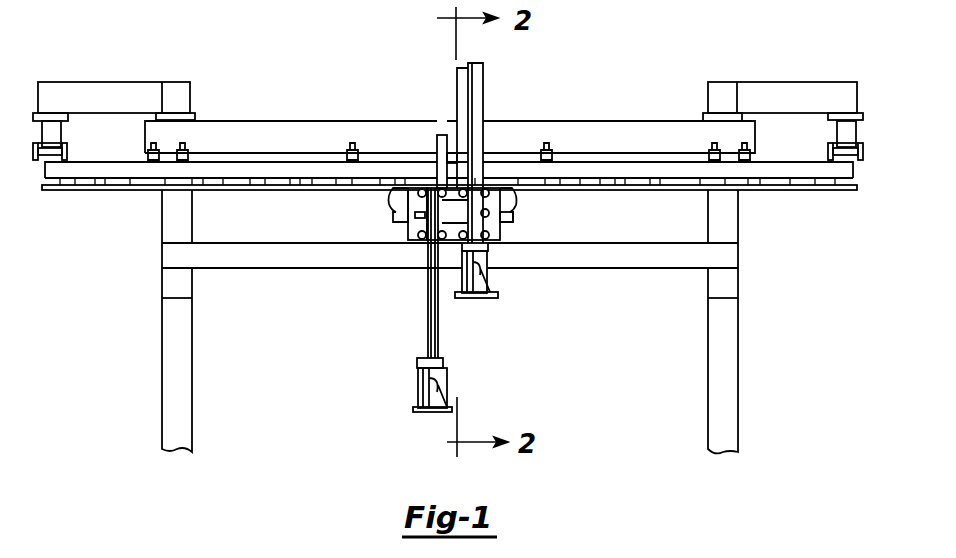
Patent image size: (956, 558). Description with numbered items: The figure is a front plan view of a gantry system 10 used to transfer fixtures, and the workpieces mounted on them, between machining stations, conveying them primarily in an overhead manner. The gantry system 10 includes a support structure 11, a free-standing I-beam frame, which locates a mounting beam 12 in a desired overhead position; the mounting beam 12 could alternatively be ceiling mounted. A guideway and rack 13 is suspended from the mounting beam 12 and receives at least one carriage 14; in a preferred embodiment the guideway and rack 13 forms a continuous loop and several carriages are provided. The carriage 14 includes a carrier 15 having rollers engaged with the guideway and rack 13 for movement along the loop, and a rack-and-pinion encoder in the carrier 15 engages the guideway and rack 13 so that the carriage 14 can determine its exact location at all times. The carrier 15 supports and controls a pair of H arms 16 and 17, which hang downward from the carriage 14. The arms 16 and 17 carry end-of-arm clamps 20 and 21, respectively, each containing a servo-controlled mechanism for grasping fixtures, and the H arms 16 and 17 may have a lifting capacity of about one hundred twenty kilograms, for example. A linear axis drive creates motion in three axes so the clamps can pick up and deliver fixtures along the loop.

The gantry system 10 is at (436, 321).
The support structure 11 is at (738, 223).
The mounting beam 12 is at (303, 168).
The guideway and rack 13 is at (107, 192).
The carriage 14 is at (378, 215).
The carrier 15 is at (517, 197).
The H arm 16 is at (483, 92).
The H arm 17 is at (427, 322).
The end-of-arm clamp 20 is at (490, 296).
The end-of-arm clamp 21 is at (422, 412).